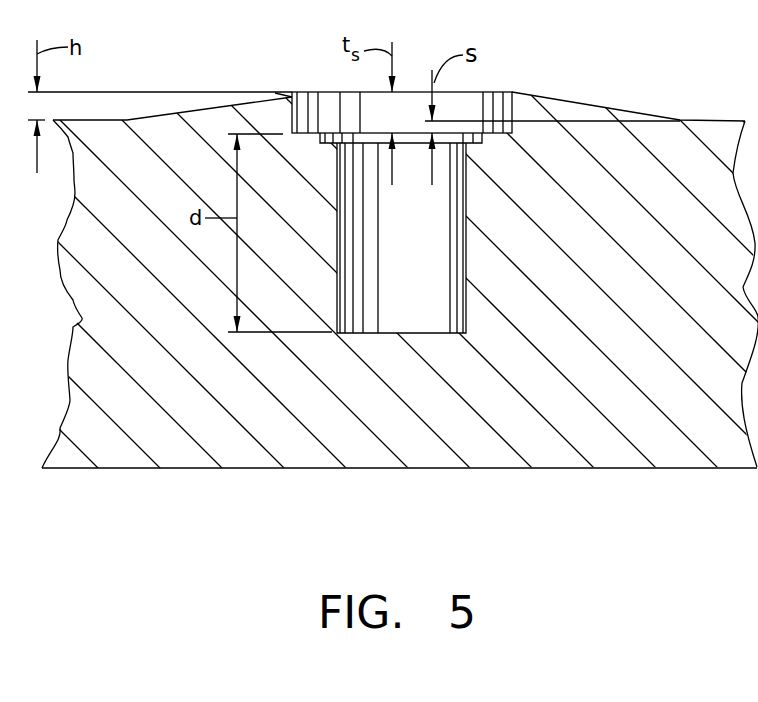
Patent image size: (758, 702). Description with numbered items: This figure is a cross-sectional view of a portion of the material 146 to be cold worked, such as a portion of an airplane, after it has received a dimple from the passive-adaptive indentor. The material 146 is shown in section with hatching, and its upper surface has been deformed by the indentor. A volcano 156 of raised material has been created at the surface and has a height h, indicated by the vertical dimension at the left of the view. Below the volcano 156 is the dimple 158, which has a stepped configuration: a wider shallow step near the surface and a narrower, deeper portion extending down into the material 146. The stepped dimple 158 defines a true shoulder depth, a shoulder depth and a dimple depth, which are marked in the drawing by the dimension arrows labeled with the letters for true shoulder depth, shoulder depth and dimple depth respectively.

The material 146 is at (700, 118).
The volcano 156 is at (528, 92).
The dimple 158 is at (466, 188).